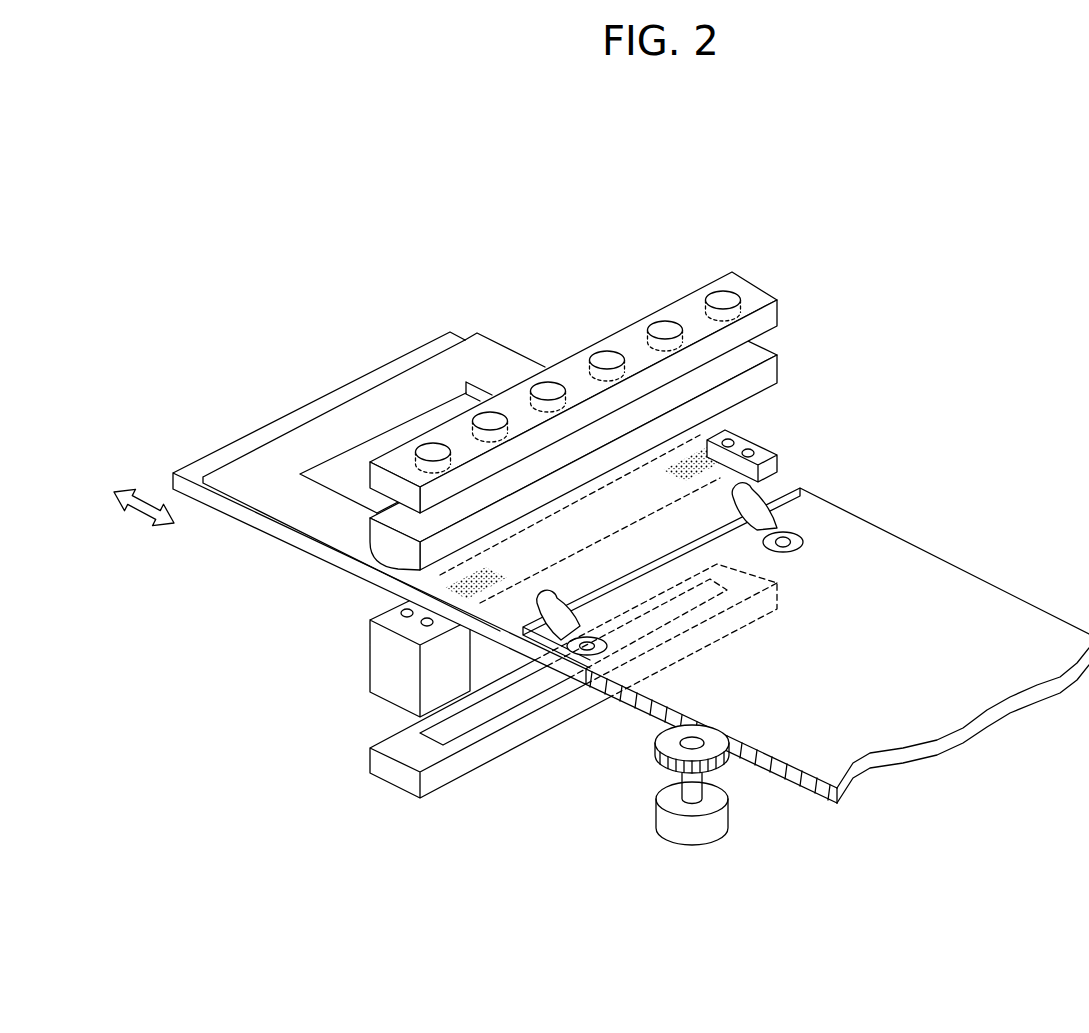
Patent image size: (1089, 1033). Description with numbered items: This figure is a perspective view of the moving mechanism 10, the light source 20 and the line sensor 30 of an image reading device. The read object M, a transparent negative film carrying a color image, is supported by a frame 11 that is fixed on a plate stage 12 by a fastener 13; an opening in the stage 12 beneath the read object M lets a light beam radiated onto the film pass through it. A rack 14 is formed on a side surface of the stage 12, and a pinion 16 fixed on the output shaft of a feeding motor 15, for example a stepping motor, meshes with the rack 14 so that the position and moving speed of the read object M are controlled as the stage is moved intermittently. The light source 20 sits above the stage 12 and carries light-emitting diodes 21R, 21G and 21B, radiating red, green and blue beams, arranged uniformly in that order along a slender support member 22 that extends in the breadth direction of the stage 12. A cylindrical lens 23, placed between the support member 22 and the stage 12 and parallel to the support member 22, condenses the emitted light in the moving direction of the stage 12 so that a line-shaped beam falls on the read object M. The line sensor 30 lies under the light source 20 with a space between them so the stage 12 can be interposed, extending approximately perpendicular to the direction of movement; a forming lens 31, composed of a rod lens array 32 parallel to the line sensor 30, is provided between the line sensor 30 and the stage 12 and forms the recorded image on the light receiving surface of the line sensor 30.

The moving mechanism 10 is at (653, 829).
The frame 11 is at (277, 460).
The plate stage 12 is at (926, 587).
The fastener 13 is at (781, 517).
The rack 14 is at (810, 783).
The feeding motor 15 is at (688, 835).
The pinion 16 is at (657, 743).
The light source 20 is at (472, 402).
The light-emitting diode 21B is at (604, 358).
The light-emitting diode 21G is at (664, 328).
The light-emitting diode 21R is at (722, 298).
The support member 22 is at (752, 294).
The cylindrical lens 23 is at (755, 356).
The line sensor 30 is at (393, 776).
The forming lens 31 is at (776, 451).
The rod lens array 32 is at (398, 602).
The read object M is at (388, 437).